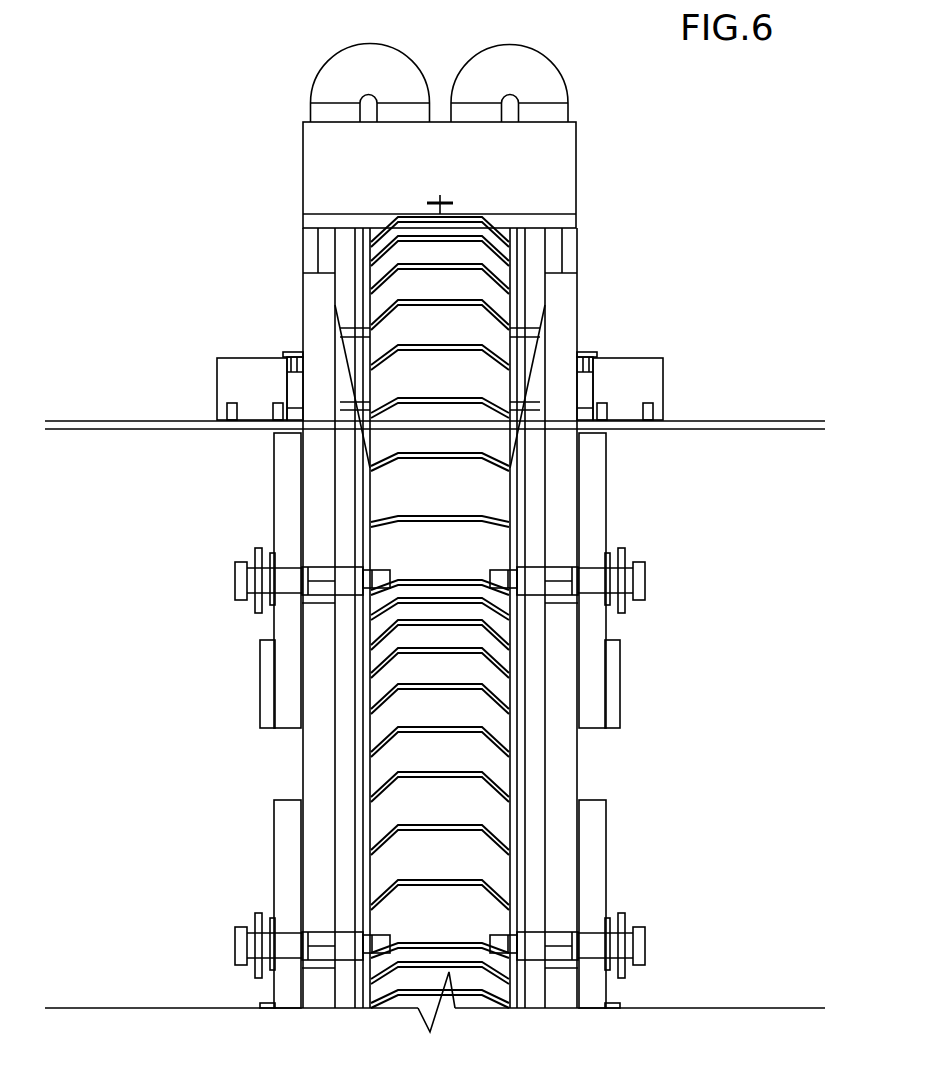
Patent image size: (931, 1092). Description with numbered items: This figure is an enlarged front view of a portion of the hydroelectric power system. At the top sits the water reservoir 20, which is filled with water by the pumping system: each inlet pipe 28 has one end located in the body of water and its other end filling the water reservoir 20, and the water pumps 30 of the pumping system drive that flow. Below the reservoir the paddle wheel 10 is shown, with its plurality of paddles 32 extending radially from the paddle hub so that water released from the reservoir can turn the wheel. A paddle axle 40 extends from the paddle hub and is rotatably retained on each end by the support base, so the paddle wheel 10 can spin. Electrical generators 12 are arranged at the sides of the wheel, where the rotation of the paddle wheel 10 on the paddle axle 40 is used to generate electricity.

The paddle wheel 10 is at (490, 200).
The electrical generator 12 is at (288, 540).
The water reservoir 20 is at (453, 176).
The inlet pipe 28 is at (345, 67).
The water pump 30 is at (250, 380).
The paddle 32 is at (457, 317).
The paddle axle 40 is at (645, 582).